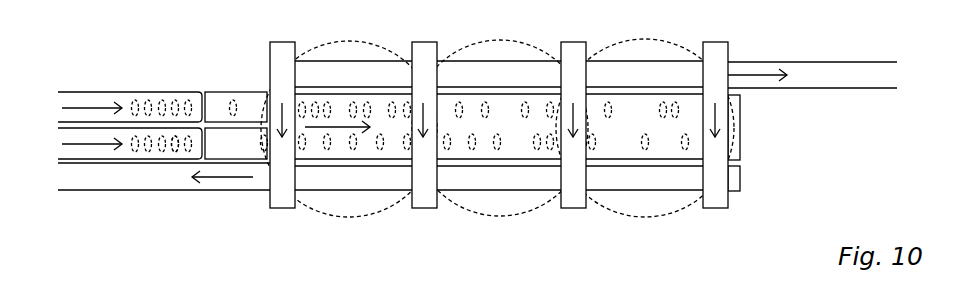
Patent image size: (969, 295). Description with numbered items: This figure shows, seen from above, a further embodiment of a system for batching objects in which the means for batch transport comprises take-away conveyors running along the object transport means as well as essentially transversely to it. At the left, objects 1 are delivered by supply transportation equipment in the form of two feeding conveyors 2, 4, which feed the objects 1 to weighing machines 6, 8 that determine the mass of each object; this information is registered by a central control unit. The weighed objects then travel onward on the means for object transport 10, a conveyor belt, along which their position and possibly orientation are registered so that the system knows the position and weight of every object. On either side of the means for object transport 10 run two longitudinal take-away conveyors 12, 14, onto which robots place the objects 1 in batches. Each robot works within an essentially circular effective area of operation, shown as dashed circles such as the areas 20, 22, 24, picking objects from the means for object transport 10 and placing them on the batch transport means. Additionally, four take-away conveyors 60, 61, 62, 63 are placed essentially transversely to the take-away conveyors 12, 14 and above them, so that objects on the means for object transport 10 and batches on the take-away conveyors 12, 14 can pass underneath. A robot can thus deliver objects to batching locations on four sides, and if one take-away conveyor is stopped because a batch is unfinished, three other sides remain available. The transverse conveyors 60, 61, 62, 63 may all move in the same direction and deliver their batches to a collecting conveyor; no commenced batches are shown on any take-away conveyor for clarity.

The objects 1 is at (173, 152).
The feeding conveyor 2 is at (152, 92).
The feeding conveyor 4 is at (127, 159).
The weighing machine 6 is at (237, 92).
The weighing machine 8 is at (213, 159).
The means for object transport 10 is at (460, 90).
The take-away conveyor 12 is at (587, 62).
The take-away conveyor 14 is at (403, 192).
The effective area of operation 20 is at (322, 215).
The effective area of operation 22 is at (490, 217).
The third treatment zone 24 is at (648, 217).
The transverse take-away conveyor 60 is at (273, 208).
The transverse take-away conveyor 61 is at (423, 208).
The transverse take-away conveyor 62 is at (572, 208).
The transverse take-away conveyor 63 is at (713, 208).